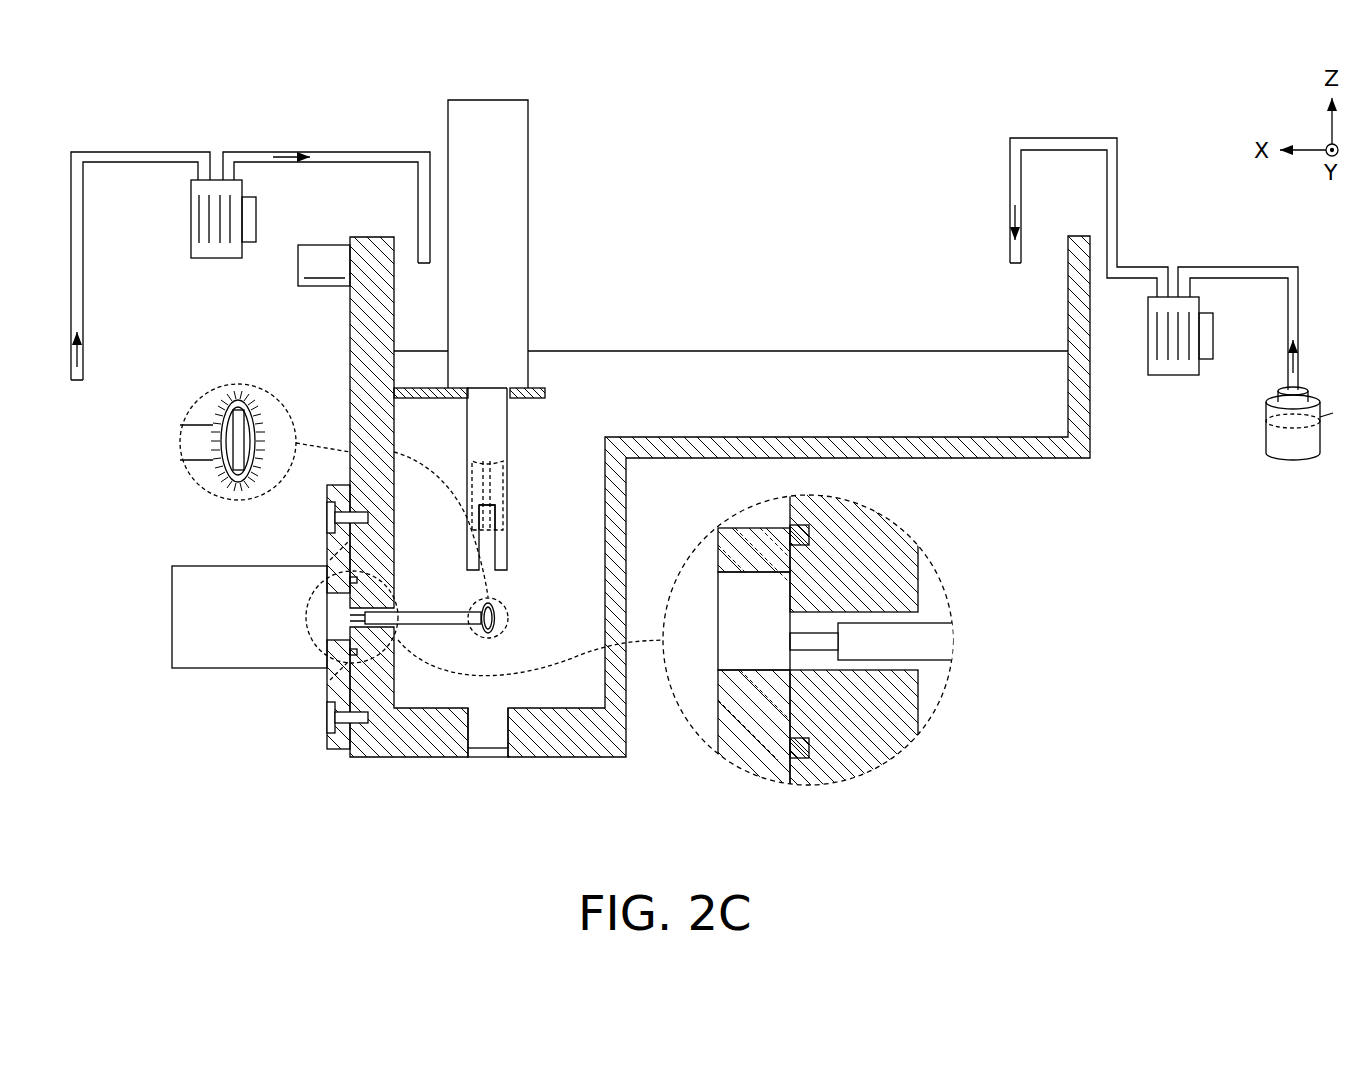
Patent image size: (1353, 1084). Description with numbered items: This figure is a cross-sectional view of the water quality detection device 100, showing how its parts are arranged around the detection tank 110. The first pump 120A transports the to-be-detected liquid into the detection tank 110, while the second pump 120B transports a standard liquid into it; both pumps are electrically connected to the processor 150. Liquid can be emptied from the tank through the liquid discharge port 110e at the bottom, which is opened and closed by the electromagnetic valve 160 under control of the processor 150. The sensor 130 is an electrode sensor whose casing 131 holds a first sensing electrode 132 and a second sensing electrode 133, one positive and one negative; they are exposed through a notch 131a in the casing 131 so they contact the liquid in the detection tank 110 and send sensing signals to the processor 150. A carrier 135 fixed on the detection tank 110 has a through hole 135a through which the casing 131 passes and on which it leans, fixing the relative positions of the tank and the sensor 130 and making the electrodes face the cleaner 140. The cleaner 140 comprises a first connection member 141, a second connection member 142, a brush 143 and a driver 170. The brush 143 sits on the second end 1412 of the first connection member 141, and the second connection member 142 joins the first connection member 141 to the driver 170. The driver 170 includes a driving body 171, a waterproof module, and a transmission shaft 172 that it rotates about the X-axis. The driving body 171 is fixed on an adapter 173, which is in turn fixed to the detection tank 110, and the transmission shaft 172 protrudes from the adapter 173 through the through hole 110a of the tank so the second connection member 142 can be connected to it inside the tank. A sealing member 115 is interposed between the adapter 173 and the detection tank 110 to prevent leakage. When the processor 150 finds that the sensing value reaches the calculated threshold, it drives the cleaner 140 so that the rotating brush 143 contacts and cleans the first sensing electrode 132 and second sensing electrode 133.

The water quality detection device 100 is at (740, 138).
The detection tank 110 is at (1013, 460).
The through hole 110a is at (888, 614).
The liquid discharge port 110e is at (492, 722).
The sealing member 115 is at (800, 750).
The first pump 120A is at (213, 258).
The second pump 120B is at (1170, 377).
The sensor 130 is at (716, 240).
The casing 131 is at (508, 428).
The notch 131a is at (492, 543).
The first sensing electrode 132 is at (507, 480).
The second sensing electrode 133 is at (487, 495).
The carrier 135 is at (535, 386).
The through hole 135a is at (472, 390).
The cleaner 140 is at (340, 352).
The first connection member 141 is at (252, 450).
The second connection member 142 is at (190, 440).
The brush 143 is at (242, 410).
The second end 1412 is at (252, 476).
The processor 150 is at (324, 265).
The electromagnetic valve 160 is at (499, 758).
The driver 170 is at (1042, 708).
The driving body 171 is at (825, 640).
The transmission shaft 172 is at (703, 683).
The adapter 173 is at (752, 748).